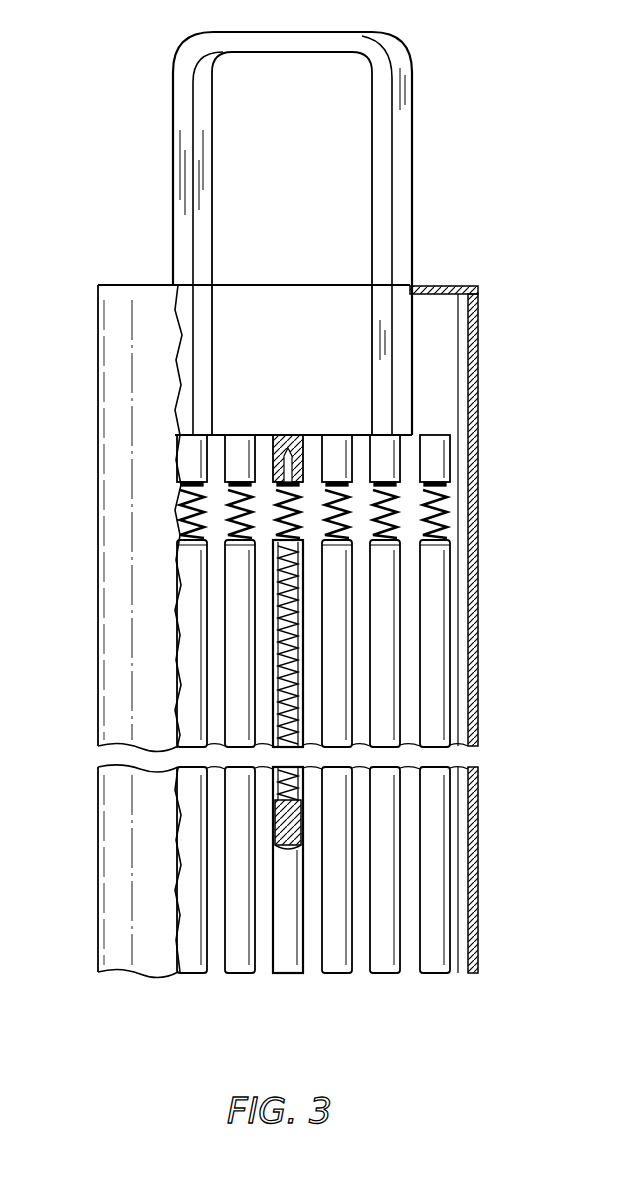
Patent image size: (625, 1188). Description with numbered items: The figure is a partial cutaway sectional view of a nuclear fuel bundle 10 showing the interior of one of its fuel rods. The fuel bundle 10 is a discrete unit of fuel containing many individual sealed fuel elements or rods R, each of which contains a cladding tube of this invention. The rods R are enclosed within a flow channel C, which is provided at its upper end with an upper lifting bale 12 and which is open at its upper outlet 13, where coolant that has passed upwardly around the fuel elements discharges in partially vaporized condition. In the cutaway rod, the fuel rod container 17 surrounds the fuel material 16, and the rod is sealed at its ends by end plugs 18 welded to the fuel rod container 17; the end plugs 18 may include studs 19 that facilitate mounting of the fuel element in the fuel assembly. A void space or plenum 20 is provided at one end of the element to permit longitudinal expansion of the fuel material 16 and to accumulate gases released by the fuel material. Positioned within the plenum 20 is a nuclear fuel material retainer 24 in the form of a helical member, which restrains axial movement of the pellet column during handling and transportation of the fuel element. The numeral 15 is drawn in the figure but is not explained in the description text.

The nuclear fuel bundle 10 is at (478, 162).
The upper lifting bale 12 is at (402, 65).
The upper outlet 13 is at (285, 285).
The pin head 15 is at (403, 472).
The fuel material core 16 is at (274, 812).
The fuel rod container 17 is at (273, 683).
The end plug 18 is at (310, 543).
The stud 19 is at (447, 507).
The plenum 20 is at (273, 712).
The nuclear fuel material retainer 24 is at (275, 603).
The fuel rod R is at (228, 637).
The flow channel C is at (475, 565).